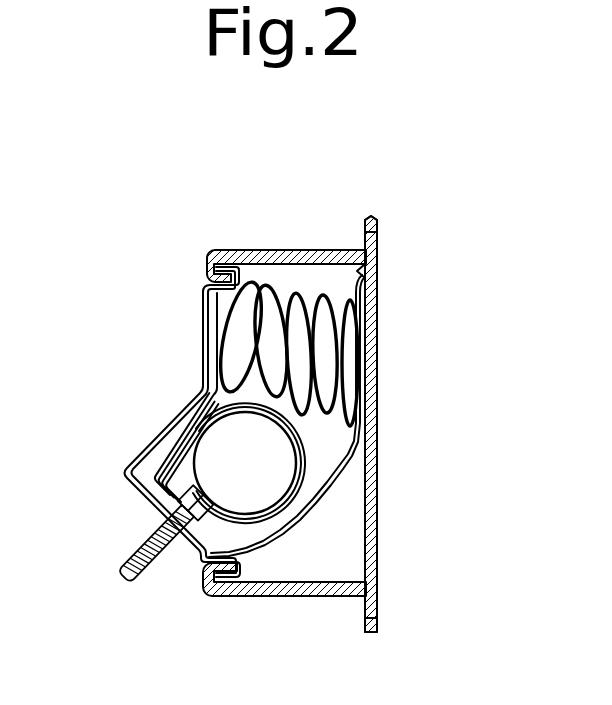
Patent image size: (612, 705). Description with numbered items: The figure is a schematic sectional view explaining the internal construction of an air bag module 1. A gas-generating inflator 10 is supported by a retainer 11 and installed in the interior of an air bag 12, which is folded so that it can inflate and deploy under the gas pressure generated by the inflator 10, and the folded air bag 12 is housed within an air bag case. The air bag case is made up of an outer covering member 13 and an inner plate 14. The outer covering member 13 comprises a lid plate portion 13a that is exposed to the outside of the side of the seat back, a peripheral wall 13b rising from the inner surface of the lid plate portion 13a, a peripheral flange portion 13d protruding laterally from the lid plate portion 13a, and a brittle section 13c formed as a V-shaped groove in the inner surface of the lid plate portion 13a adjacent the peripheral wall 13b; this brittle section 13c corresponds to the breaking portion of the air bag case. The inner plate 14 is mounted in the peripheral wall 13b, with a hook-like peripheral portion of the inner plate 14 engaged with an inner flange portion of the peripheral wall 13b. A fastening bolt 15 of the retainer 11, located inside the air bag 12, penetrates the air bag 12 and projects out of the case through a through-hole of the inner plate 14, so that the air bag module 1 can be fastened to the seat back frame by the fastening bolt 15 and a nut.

The air bag module 1 is at (385, 157).
The inflator 10 is at (270, 468).
The retainer 11 is at (304, 442).
The air bag 12 is at (235, 336).
The outer covering member 13 is at (312, 247).
The lid plate portion 13a is at (378, 333).
The peripheral wall 13b is at (251, 250).
The brittle section 13c is at (360, 294).
The peripheral flange portion 13d is at (370, 237).
The inner plate 14 is at (203, 355).
The fastening bolt 15 is at (133, 551).